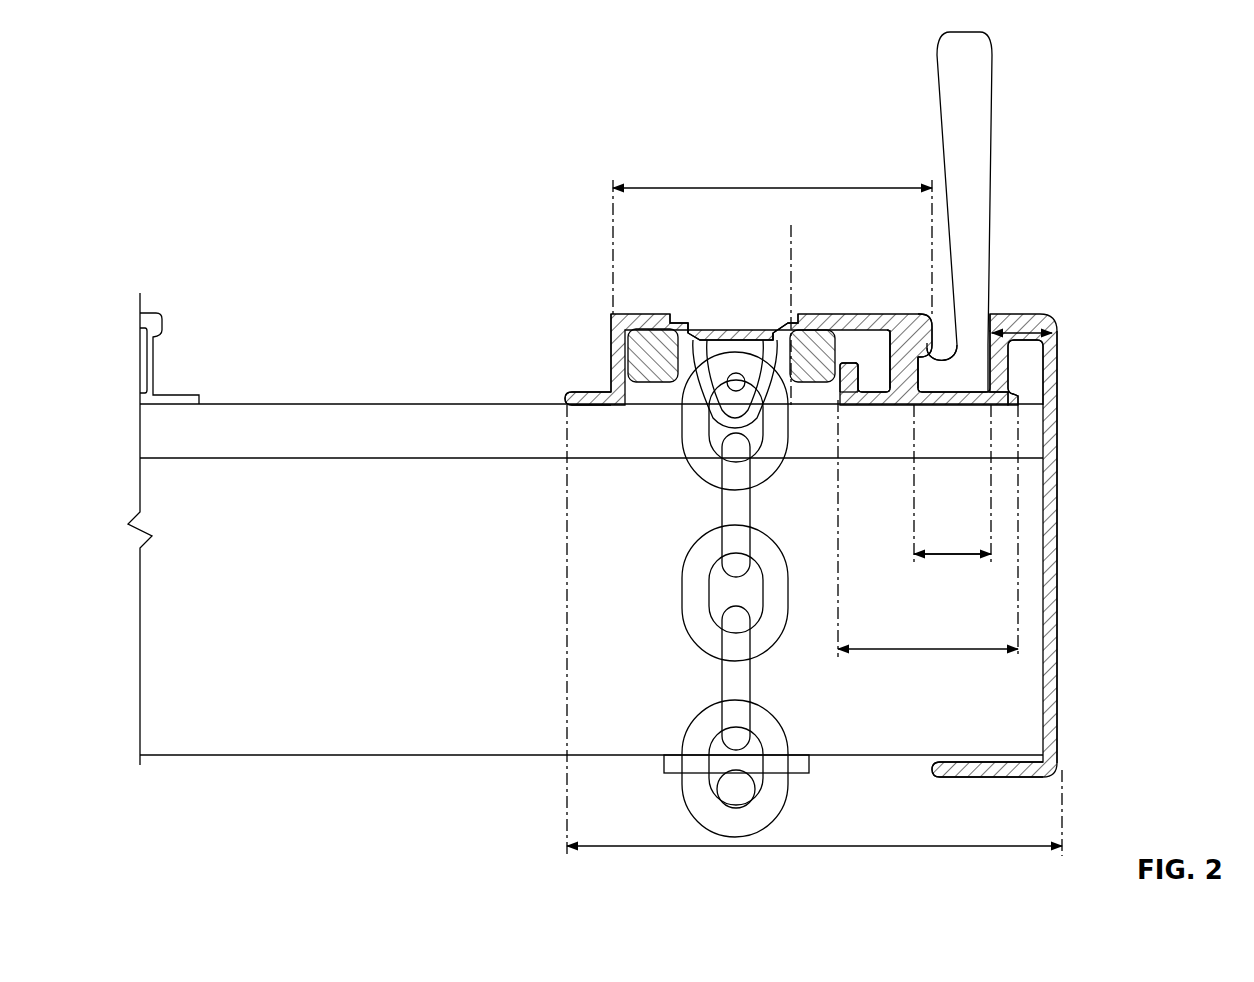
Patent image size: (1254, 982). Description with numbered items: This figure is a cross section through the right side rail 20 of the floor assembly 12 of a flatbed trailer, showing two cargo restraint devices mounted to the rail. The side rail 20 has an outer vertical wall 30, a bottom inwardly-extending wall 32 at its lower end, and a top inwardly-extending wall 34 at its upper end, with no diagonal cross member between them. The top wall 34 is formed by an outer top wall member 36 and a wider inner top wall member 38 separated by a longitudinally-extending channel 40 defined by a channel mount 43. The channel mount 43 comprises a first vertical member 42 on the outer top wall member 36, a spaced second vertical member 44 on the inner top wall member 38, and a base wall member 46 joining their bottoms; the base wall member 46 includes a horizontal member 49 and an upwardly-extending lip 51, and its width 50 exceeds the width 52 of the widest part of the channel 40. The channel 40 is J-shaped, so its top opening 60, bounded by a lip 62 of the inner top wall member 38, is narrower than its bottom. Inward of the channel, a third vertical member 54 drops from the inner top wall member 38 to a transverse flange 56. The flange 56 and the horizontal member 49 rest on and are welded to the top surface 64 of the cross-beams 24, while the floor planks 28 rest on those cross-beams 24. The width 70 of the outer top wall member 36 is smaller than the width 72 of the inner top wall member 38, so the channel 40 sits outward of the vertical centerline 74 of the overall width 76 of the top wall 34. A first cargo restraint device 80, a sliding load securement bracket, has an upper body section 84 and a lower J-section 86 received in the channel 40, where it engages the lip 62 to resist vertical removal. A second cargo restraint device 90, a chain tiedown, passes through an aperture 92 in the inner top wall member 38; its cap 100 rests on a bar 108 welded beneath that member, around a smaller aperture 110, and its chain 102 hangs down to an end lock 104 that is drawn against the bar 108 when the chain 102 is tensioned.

The floor assembly 12 is at (585, 526).
The side rail 20 is at (855, 444).
The cross-beams 24 is at (388, 753).
The floor planks 28 is at (148, 313).
The vertical wall 30 is at (1048, 532).
The bottom wall 32 is at (982, 781).
The top wall 34 is at (606, 298).
The outer top wall member 36 is at (1030, 316).
The inner top wall member 38 is at (650, 330).
The channel 40 is at (913, 375).
The first vertical member 42 is at (1003, 360).
The channel mount 43 is at (906, 414).
The second vertical member 44 is at (884, 351).
The base wall member 46 is at (961, 410).
The horizontal member 49 is at (880, 398).
The width 50 is at (928, 652).
The lip 51 is at (846, 391).
The width 52 is at (952, 557).
The third vertical member 54 is at (611, 347).
The flange 56 is at (582, 396).
The top opening 60 is at (992, 316).
The lip 62 is at (923, 331).
The top surface 64 is at (283, 404).
The width 70 is at (1040, 318).
The width 72 is at (775, 188).
The vertical centerline 74 is at (793, 228).
The overall width 76 is at (858, 844).
The first cargo restraint device 80 is at (1005, 267).
The body section 84 is at (982, 141).
The J-section 86 is at (952, 375).
The second cargo restraint device 90 is at (711, 594).
The aperture 92 is at (682, 323).
The cap 100 is at (730, 318).
The chain 102 is at (698, 634).
The end lock 104 is at (673, 767).
The bar 108 is at (661, 384).
The aperture 110 is at (727, 322).